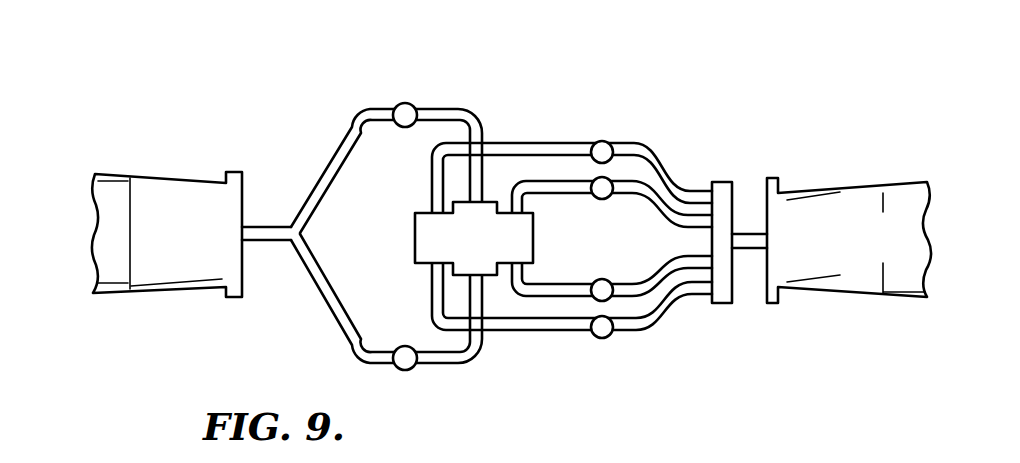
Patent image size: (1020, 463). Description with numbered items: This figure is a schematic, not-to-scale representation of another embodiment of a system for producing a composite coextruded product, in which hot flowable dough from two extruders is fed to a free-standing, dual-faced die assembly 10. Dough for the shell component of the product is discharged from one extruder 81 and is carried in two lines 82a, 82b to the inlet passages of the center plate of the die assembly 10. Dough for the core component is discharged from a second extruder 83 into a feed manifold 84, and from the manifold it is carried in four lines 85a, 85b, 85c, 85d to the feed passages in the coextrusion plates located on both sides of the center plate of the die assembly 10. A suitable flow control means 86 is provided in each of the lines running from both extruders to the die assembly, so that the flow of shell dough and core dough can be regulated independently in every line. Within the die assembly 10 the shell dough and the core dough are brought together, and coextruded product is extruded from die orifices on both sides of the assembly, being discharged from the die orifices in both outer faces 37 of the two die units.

The die assembly 10 is at (377, 223).
The outer faces 37 is at (415, 251).
The extruder 81 is at (163, 253).
The line 82a is at (348, 137).
The line 82b is at (340, 336).
The extruder 83 is at (884, 257).
The feed manifold 84 is at (729, 181).
The line 85a is at (662, 168).
The line 85b is at (658, 320).
The line 85c is at (643, 208).
The line 85d is at (649, 268).
The flow control means 86 is at (410, 102).